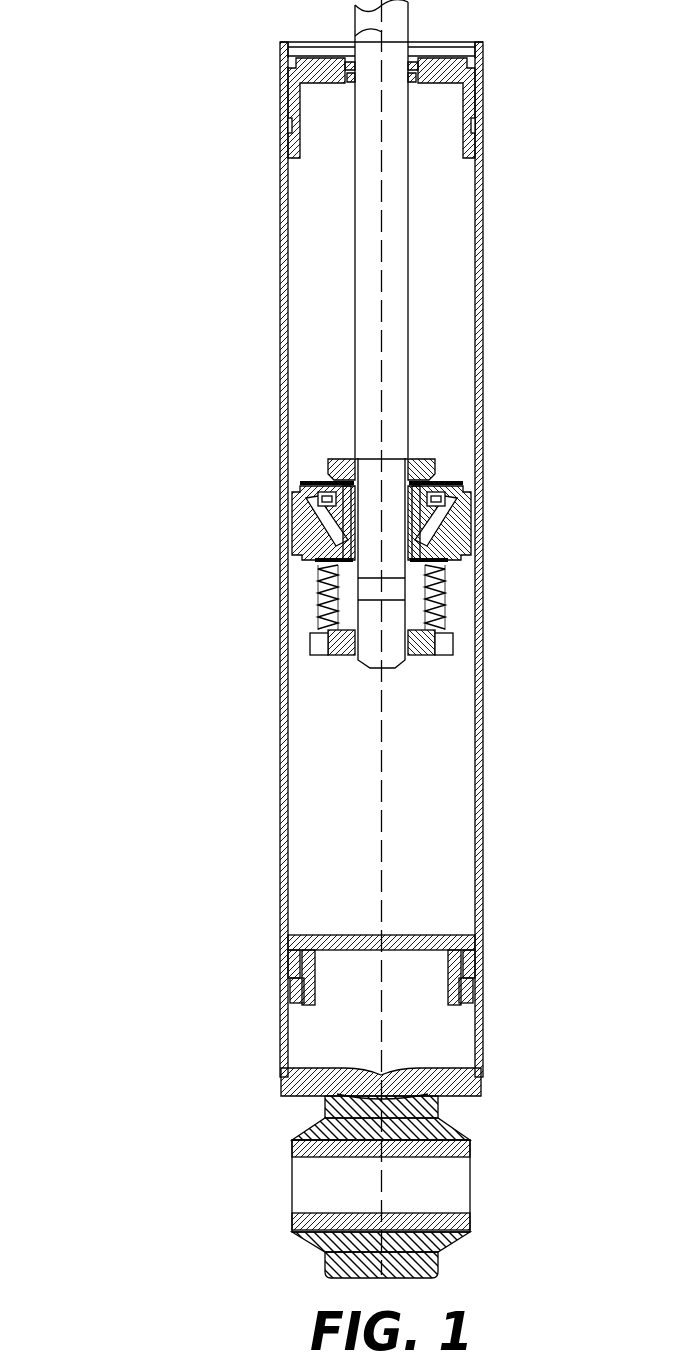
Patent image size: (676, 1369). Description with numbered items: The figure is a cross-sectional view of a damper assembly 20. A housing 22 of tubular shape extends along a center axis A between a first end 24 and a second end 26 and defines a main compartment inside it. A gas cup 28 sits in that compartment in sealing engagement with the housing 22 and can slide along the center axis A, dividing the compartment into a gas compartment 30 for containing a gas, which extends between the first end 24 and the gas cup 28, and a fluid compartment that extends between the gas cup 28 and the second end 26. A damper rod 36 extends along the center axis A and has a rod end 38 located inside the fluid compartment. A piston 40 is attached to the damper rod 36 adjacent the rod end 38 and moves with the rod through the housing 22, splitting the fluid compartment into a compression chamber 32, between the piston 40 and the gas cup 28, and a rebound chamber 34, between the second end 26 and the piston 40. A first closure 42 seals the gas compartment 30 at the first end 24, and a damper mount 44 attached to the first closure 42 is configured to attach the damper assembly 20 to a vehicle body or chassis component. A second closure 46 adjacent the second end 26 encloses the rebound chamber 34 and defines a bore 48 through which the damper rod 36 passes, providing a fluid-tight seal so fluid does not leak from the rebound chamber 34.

The damper assembly 20 is at (132, 88).
The housing 22 is at (482, 845).
The first end 24 is at (480, 1078).
The second end 26 is at (478, 42).
The gas cup 28 is at (372, 932).
The gas compartment 30 is at (455, 1033).
The compression chamber 32 is at (313, 710).
The rebound chamber 34 is at (447, 363).
The damper rod 36 is at (367, 327).
The rod end 38 is at (372, 668).
The piston 40 is at (290, 493).
The first closure 42 is at (290, 1088).
The damper mount 44 is at (295, 1222).
The second closure 46 is at (470, 107).
The bore 48 is at (362, 72).
The center axis A is at (382, 820).